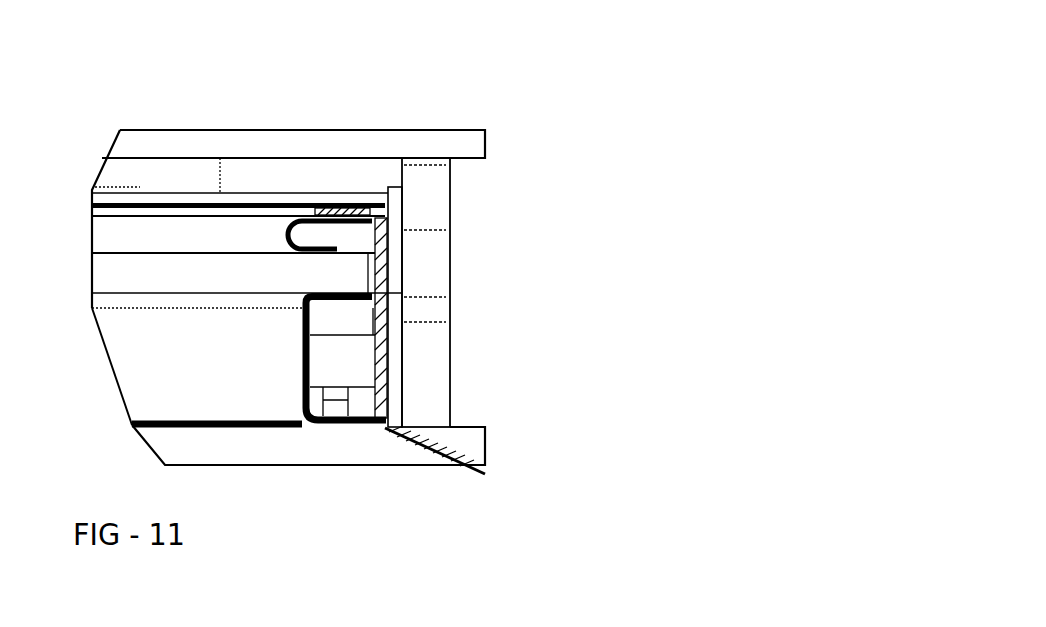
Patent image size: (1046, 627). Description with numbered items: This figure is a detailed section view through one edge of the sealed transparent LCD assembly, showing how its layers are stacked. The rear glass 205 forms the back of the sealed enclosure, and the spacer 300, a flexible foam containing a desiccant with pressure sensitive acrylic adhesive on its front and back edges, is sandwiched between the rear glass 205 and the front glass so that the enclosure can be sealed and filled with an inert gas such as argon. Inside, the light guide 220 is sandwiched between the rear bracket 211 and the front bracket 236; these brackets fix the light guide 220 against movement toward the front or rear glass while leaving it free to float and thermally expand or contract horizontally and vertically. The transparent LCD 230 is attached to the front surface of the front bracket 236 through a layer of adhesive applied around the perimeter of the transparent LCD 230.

The rear glass 205 is at (342, 452).
The rear bracket 211 is at (385, 428).
The light guide 220 is at (230, 267).
The transparent LCD 230 is at (330, 197).
The front bracket 236 is at (403, 320).
The spacer 300 is at (452, 212).